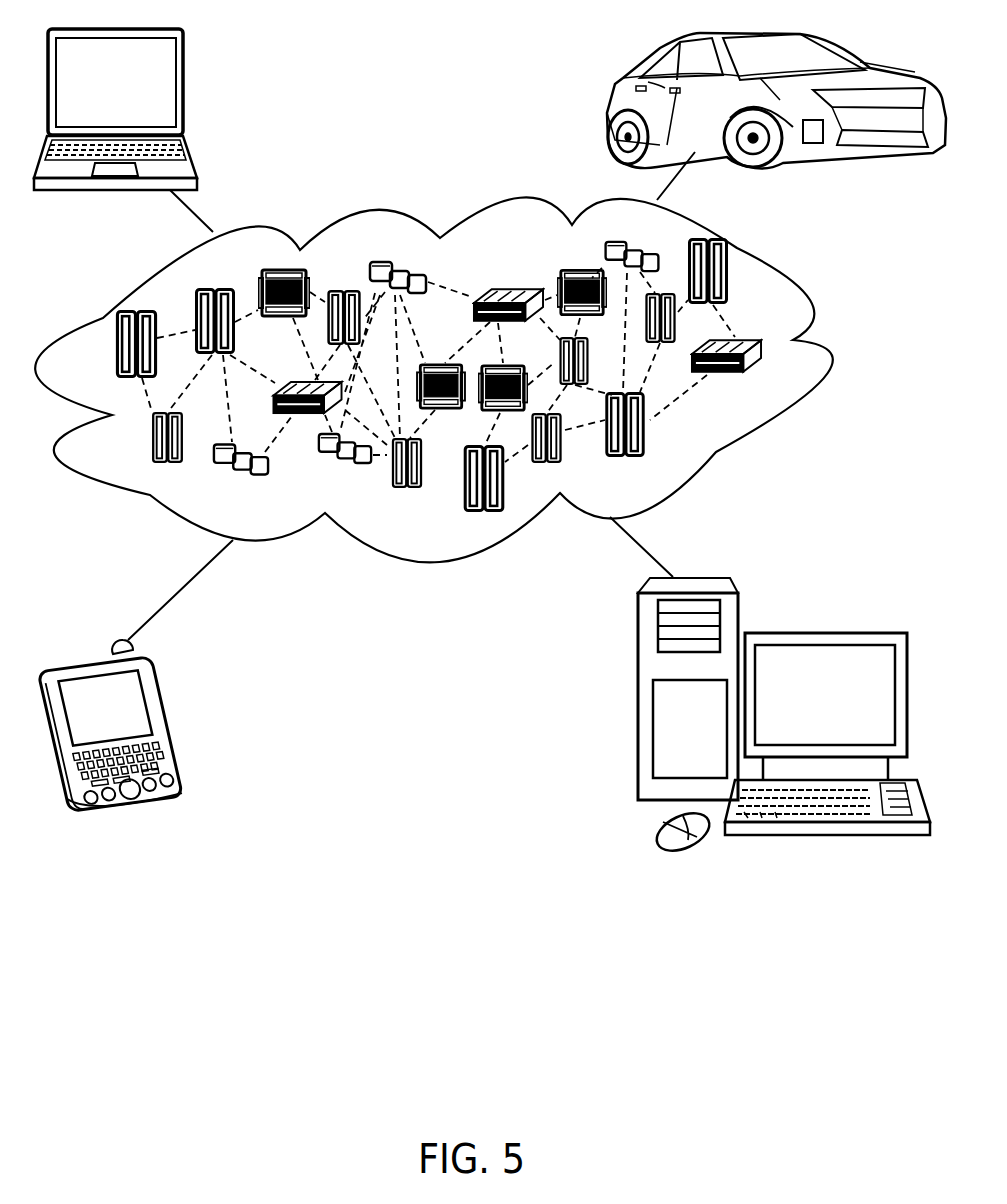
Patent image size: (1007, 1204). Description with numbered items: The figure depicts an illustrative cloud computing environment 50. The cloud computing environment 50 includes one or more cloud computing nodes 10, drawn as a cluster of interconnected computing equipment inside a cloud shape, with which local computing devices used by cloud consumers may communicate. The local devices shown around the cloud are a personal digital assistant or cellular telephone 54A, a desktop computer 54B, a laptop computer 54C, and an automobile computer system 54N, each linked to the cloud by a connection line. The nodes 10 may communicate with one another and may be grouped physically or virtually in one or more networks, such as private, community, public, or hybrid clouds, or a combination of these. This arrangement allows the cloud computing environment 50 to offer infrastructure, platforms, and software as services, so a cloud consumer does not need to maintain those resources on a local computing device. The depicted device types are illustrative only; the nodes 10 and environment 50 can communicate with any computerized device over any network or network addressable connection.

The cloud computing node 10 is at (767, 382).
The cloud computing environment 50 is at (459, 379).
The personal digital assistant or cellular telephone 54A is at (175, 725).
The desktop computer 54B is at (825, 633).
The laptop computer 54C is at (185, 88).
The automobile computer system 54N is at (607, 100).